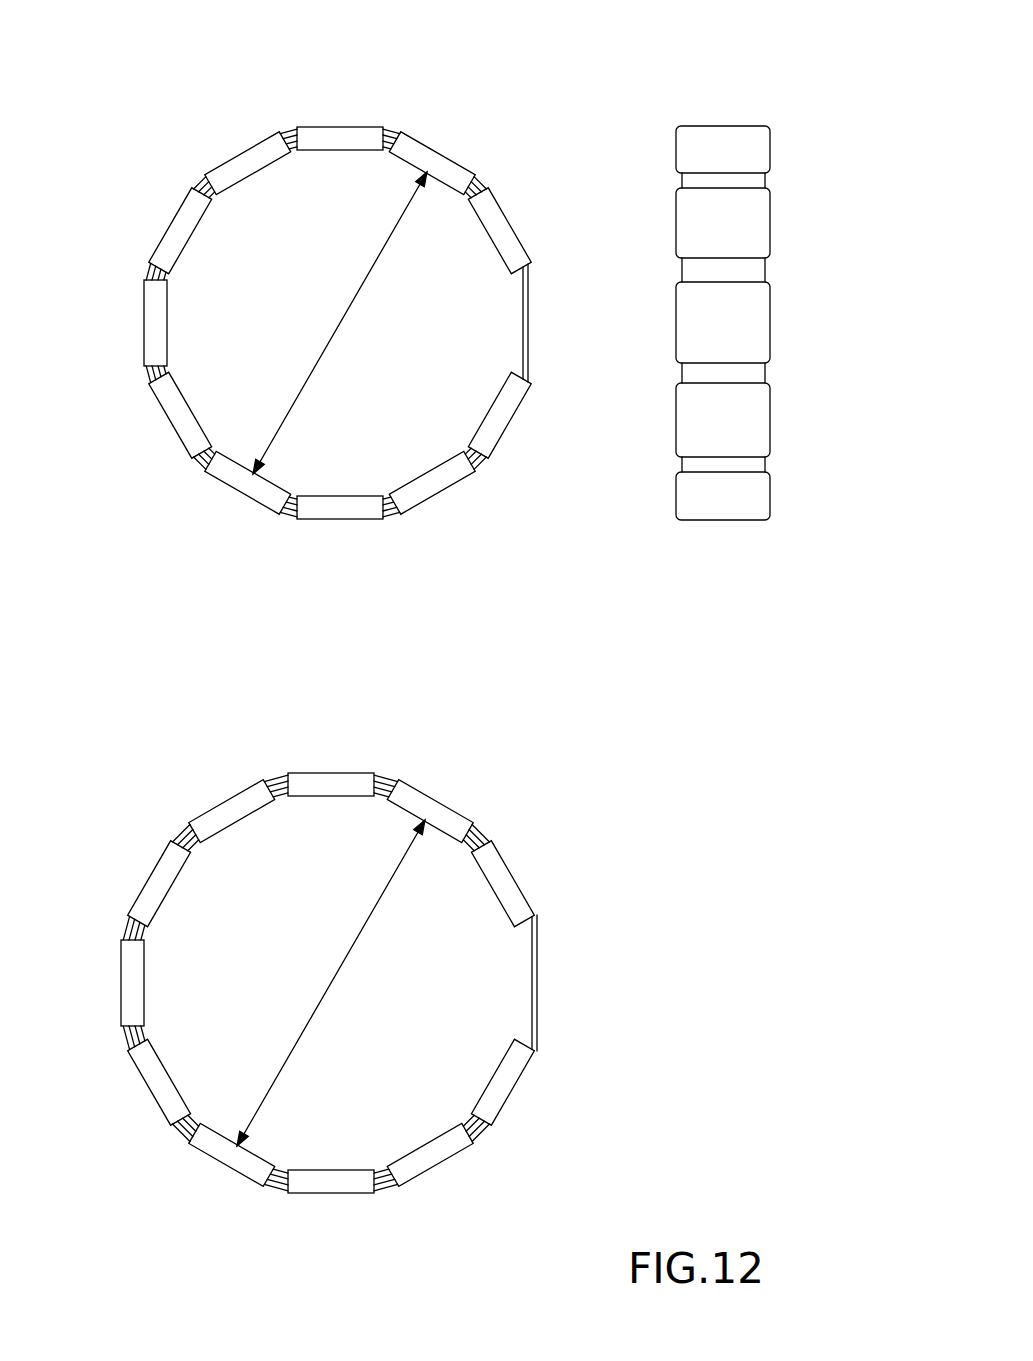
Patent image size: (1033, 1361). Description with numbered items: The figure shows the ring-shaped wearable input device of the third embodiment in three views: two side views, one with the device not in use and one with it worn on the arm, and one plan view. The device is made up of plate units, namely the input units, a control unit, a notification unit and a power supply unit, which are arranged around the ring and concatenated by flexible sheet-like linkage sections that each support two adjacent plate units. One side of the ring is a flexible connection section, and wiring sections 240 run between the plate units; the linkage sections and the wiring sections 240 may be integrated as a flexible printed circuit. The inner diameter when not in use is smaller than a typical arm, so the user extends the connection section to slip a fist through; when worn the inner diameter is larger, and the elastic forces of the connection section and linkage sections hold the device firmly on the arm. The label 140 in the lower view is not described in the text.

The wiring section 240 is at (293, 143).
The connecting portion 140 is at (277, 793).